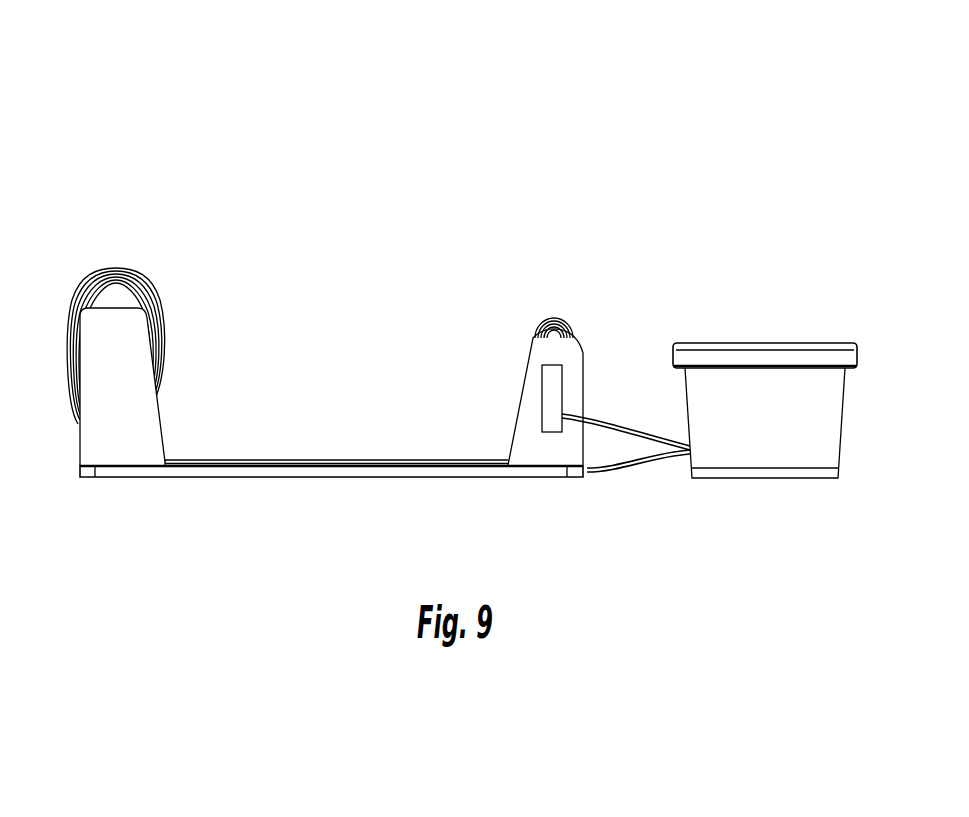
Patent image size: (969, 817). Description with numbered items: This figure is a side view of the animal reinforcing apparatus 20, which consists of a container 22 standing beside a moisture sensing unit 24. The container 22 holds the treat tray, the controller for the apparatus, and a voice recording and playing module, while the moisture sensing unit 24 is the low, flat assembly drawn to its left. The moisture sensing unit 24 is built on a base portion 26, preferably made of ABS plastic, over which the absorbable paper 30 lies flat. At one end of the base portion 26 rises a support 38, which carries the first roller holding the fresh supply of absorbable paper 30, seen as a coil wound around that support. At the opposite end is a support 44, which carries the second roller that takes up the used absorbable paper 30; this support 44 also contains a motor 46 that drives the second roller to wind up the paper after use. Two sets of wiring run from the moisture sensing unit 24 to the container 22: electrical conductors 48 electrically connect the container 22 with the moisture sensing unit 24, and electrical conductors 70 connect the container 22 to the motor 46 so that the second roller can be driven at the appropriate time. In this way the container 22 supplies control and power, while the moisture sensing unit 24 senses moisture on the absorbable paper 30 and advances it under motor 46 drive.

The animal reinforcing apparatus 20 is at (557, 148).
The container 22 is at (800, 309).
The moisture sensing unit 24 is at (331, 584).
The base portion 26 is at (267, 479).
The absorbable paper 30 is at (117, 266).
The support 38 is at (525, 363).
The support 44 is at (86, 437).
The motor 46 is at (548, 407).
The electrical conductors 48 is at (633, 468).
The electrical conductors 70 is at (628, 430).